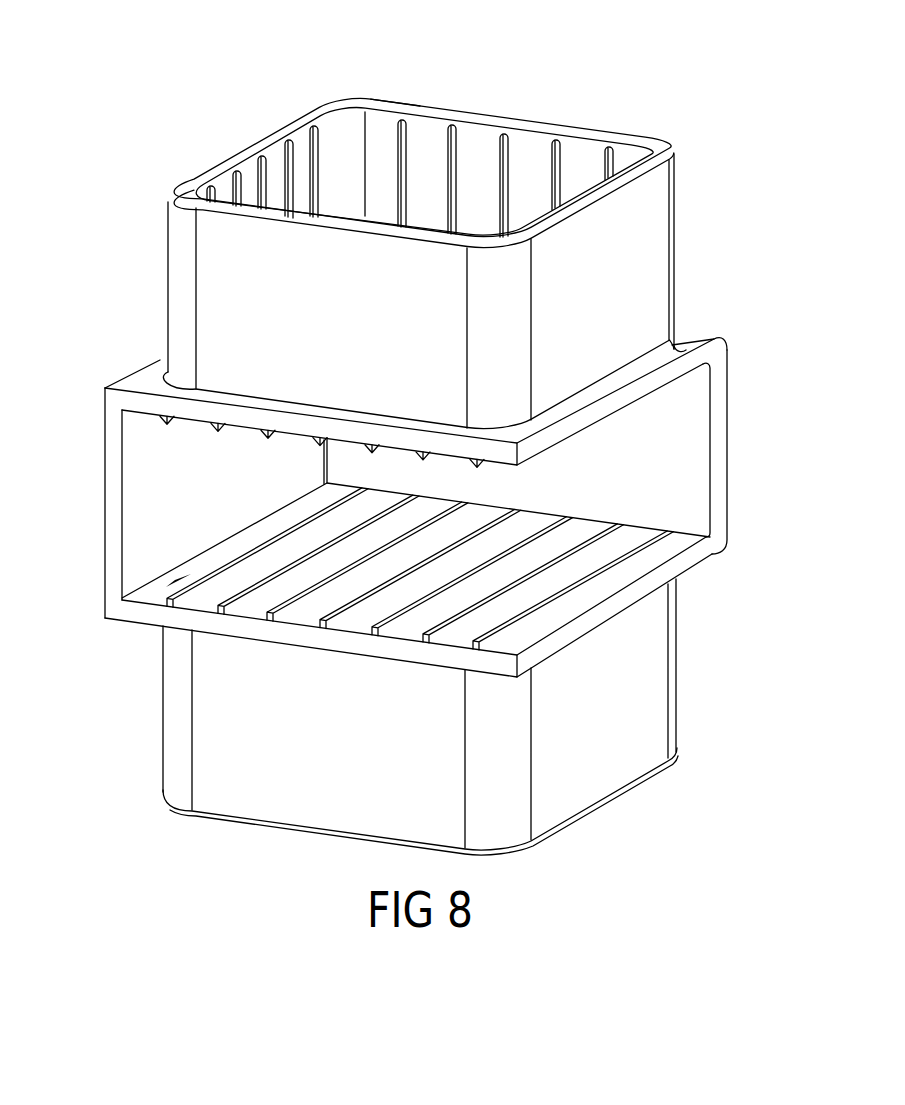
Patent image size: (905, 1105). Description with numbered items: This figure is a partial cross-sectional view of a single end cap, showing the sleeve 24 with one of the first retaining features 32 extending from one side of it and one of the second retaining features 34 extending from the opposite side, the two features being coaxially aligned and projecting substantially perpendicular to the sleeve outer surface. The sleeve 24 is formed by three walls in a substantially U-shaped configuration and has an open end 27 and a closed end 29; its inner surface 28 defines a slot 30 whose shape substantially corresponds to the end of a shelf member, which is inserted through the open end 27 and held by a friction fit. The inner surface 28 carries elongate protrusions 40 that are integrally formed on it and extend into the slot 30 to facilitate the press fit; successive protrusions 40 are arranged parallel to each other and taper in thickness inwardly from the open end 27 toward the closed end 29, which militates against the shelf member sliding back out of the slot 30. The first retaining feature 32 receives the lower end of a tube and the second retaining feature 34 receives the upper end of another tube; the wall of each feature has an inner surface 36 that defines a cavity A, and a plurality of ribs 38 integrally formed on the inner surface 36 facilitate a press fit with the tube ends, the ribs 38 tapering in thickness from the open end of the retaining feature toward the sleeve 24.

The sleeve 24 is at (424, 510).
The open end 27 is at (108, 497).
The inner surface 28 is at (711, 478).
The closed end 29 is at (728, 458).
The slot 30 is at (128, 604).
The first retaining features 32 is at (606, 288).
The second retaining features 34 is at (603, 726).
The inner surface 36 is at (275, 180).
The ribs 38 is at (548, 155).
The elongate protrusions 40 is at (221, 428).
The cavity A is at (383, 95).